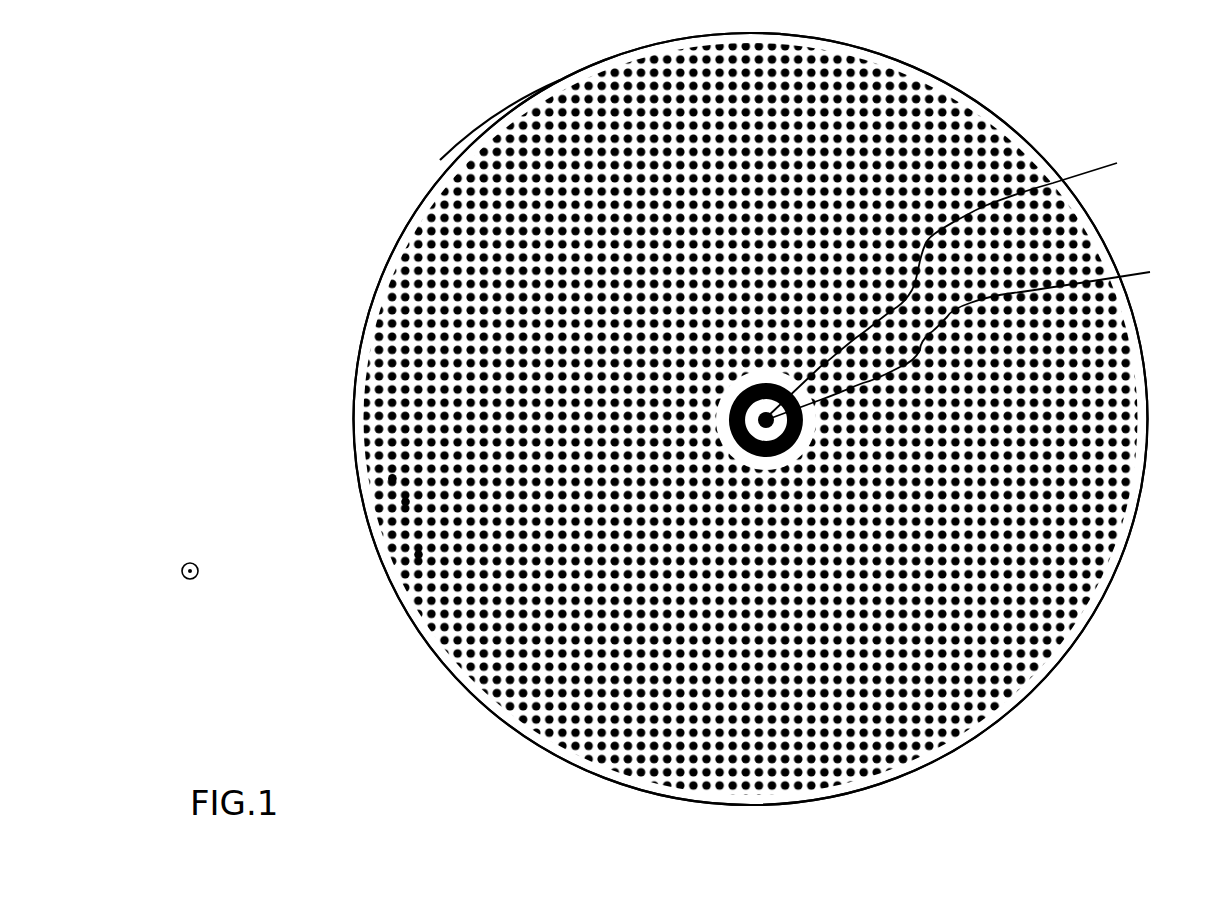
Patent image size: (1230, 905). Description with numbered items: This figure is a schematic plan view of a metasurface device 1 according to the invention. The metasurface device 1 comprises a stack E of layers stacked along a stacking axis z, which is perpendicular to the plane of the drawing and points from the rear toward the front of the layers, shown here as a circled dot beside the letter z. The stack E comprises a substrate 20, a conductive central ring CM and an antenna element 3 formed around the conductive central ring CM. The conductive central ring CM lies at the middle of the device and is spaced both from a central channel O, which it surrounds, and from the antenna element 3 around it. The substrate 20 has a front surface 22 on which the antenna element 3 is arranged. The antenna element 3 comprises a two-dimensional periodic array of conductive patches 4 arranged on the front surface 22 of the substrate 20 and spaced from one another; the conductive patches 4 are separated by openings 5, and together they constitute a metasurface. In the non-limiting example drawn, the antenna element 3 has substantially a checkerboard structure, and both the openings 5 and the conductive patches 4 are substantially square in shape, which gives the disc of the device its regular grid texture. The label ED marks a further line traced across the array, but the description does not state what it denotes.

The metasurface device 1 is at (348, 158).
The substrate 20 is at (361, 392).
The antenna element 3 is at (379, 449).
The conductive patches 4 is at (392, 480).
The openings 5 is at (408, 498).
The front surface 22 is at (426, 555).
The stack E is at (500, 142).
The central channel O is at (755, 418).
The conductive central ring CM is at (963, 281).
The edge direction line ED is at (978, 338).
The stacking axis z is at (200, 573).